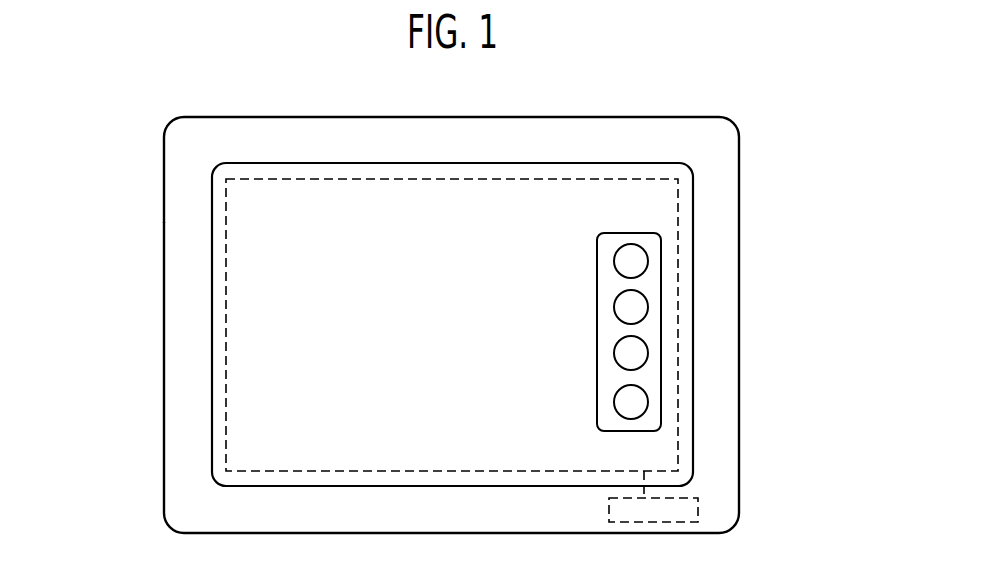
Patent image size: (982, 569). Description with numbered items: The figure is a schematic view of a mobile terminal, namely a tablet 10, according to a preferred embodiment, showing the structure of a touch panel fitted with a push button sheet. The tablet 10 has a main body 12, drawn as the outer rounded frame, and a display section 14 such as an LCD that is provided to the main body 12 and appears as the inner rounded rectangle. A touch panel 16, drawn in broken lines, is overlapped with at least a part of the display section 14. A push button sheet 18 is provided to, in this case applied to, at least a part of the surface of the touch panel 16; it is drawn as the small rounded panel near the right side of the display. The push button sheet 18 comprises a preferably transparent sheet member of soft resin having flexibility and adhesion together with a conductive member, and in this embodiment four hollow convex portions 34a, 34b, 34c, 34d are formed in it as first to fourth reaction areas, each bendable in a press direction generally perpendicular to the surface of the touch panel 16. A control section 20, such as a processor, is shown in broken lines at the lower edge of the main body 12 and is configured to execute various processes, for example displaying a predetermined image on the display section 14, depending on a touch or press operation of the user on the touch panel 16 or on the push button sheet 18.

The mobile terminal (tablet) 10 is at (124, 137).
The main body 12 is at (164, 222).
The display section 14 is at (212, 303).
The touch panel 16 is at (225, 384).
The push button sheet 18 is at (661, 276).
The control section 20 is at (698, 508).
The hollow convex portion 34a is at (648, 262).
The hollow convex portion 34b is at (648, 307).
The hollow convex portion 34c is at (648, 353).
The hollow convex portion 34d is at (648, 401).